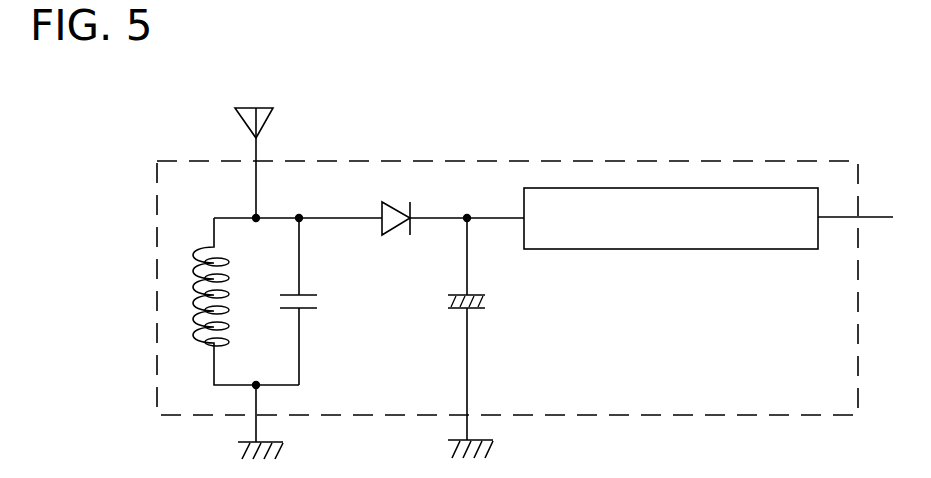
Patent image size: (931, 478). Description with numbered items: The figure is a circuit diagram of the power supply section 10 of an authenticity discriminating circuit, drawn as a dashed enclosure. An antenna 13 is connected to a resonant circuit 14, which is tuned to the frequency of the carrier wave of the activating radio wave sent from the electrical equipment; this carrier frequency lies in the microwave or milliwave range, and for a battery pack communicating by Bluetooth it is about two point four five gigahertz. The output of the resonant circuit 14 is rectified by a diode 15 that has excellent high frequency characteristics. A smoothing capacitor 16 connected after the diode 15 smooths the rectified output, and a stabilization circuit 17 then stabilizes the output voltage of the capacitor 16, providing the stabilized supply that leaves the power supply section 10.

The power supply section 10 is at (578, 161).
The antenna 13 is at (256, 150).
The resonant circuit 14 is at (181, 331).
The diode 15 is at (392, 233).
The smoothing capacitor 16 is at (455, 309).
The stabilization circuit 17 is at (643, 249).